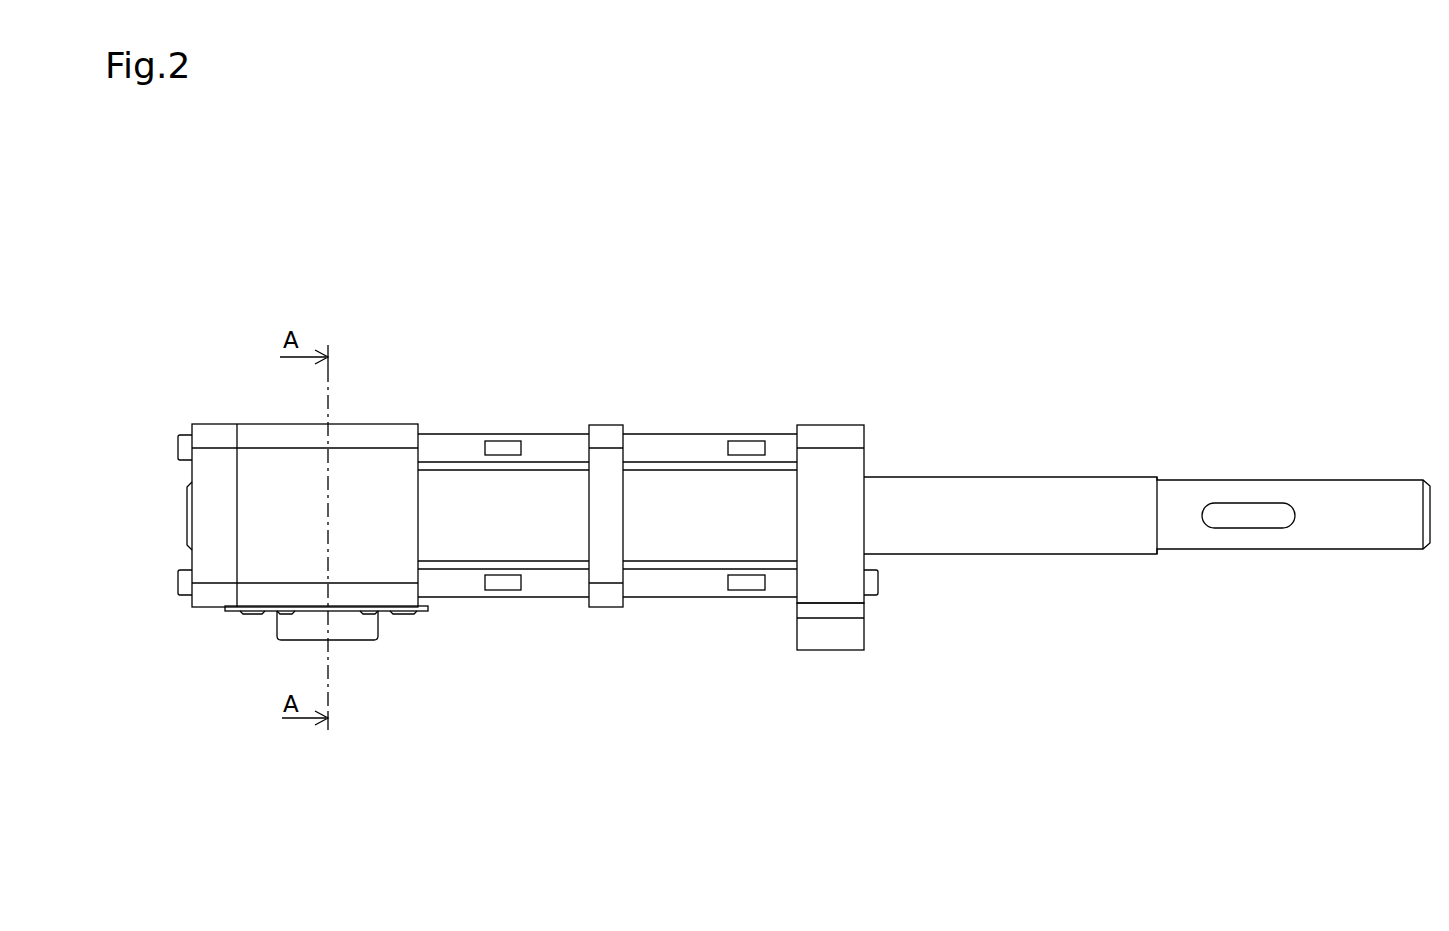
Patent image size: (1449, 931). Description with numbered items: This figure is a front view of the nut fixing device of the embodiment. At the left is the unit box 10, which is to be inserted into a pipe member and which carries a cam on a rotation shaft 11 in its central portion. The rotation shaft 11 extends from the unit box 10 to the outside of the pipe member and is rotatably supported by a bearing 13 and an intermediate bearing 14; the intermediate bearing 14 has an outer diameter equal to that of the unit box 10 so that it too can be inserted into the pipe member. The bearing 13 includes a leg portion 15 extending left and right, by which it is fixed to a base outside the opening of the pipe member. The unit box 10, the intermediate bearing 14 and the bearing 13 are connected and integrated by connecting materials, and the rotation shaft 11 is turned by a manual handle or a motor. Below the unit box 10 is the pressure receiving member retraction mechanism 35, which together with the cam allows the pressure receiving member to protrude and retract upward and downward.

The unit box 10 is at (393, 462).
The rotation shaft 11 is at (1010, 487).
The bearing 13 is at (830, 437).
The intermediate bearing 14 is at (605, 437).
The leg portion 15 is at (830, 640).
The pressure receiving member retraction mechanism 35 is at (232, 612).